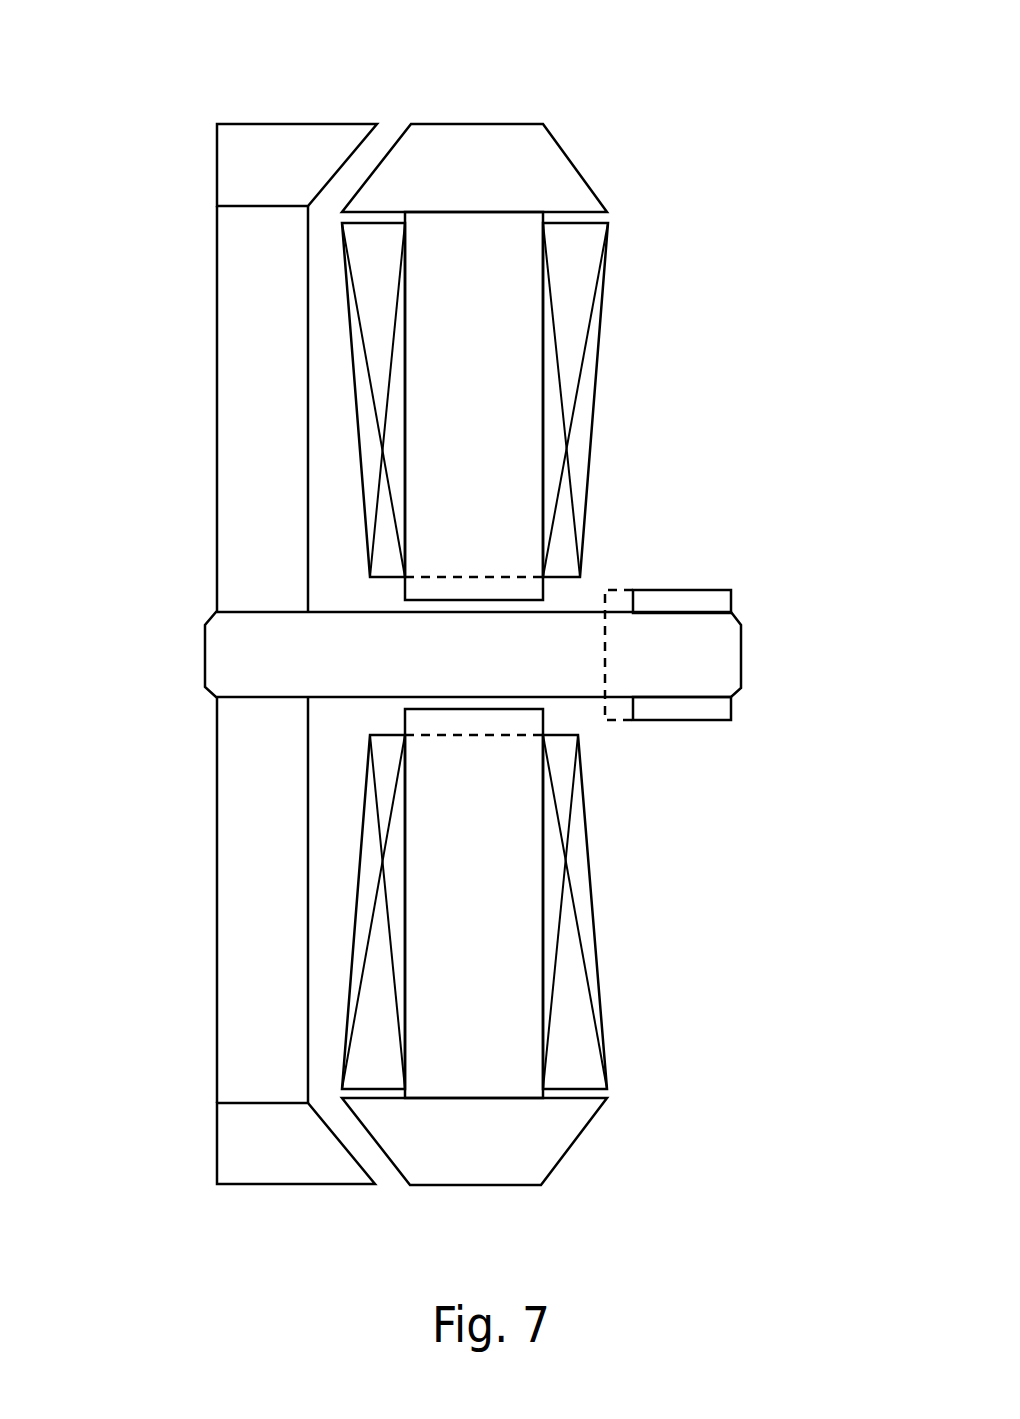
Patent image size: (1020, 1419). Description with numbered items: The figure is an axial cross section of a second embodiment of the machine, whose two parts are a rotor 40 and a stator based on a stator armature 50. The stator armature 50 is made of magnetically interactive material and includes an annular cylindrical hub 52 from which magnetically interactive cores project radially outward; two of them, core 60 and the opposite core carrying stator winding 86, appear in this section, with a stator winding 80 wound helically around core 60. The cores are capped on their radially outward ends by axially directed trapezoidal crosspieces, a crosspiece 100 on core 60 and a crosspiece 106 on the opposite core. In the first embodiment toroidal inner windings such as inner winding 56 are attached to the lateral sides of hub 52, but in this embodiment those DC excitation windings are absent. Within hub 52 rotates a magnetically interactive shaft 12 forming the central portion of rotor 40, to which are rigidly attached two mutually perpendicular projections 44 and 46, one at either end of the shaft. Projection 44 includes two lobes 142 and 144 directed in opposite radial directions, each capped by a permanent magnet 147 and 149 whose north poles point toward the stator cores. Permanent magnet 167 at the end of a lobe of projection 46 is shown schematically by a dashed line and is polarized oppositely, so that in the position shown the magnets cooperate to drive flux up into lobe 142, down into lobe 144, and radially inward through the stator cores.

The shaft 12 is at (504, 670).
The rotor 40 is at (203, 319).
The projection 44 is at (243, 539).
The projection 46 is at (722, 713).
The stator armature 50 is at (703, 255).
The hub 52 is at (412, 594).
The inner winding 56 is at (507, 953).
The core 60 is at (507, 380).
The stator winding 80 is at (387, 256).
The stator winding 86 is at (387, 1083).
The crosspiece 100 is at (498, 184).
The crosspiece 106 is at (498, 1152).
The lobe 142 is at (291, 355).
The lobe 144 is at (283, 914).
The permanent magnet 147 is at (273, 123).
The permanent magnet 149 is at (268, 1173).
The permanent magnet 167 is at (615, 588).